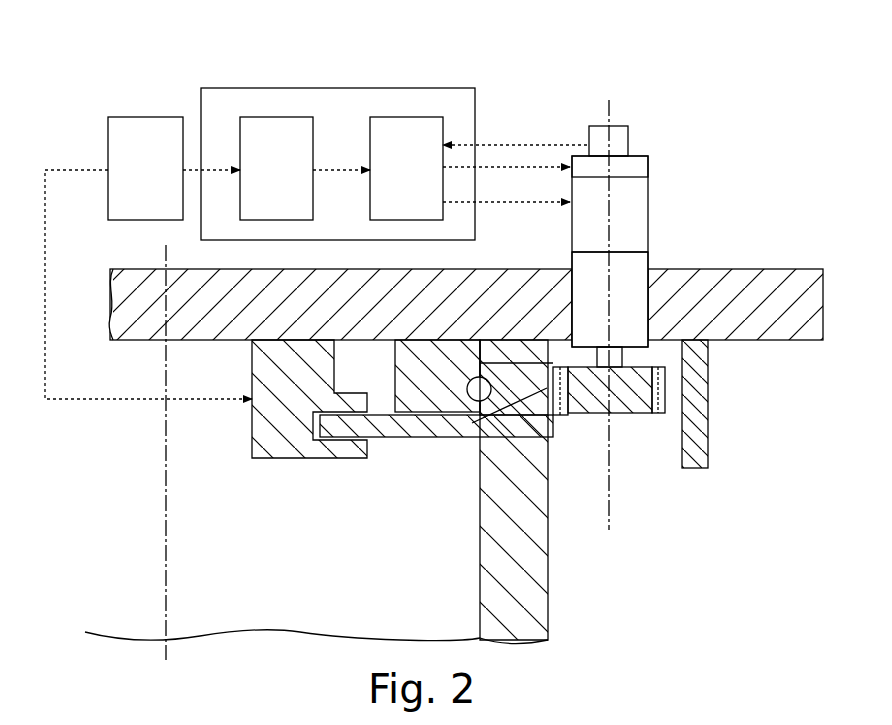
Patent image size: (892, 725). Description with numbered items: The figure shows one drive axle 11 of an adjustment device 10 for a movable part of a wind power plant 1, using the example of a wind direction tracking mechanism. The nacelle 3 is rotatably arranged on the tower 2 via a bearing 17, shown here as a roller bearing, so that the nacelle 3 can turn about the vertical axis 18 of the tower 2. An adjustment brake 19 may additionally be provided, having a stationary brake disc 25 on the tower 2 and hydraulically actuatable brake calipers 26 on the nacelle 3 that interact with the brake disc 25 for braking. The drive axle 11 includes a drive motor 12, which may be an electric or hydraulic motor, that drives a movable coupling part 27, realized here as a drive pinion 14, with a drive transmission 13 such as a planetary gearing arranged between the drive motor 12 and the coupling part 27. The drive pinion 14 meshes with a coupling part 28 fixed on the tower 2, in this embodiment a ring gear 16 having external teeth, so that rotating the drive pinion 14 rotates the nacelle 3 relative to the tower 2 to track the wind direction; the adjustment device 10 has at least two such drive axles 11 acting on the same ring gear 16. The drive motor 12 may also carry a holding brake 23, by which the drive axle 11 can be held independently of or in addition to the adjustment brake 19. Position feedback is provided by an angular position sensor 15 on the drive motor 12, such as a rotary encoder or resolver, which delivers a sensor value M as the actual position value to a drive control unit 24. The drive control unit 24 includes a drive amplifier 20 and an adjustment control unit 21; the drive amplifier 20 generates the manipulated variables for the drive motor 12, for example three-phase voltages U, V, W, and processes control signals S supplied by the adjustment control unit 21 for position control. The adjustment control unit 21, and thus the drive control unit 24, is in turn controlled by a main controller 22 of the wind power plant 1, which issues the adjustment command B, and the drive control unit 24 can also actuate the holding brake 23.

The wind power plant 1 is at (665, 610).
The tower 2 is at (517, 583).
The nacelle 3 is at (145, 305).
The adjustment device 10 is at (670, 441).
The drive axle 11 is at (660, 255).
The drive motor 12 is at (625, 213).
The drive transmission 13 is at (625, 308).
The drive pinion 14 is at (655, 392).
The angular position sensor 15 is at (620, 140).
The ring gear 16 is at (567, 437).
The bearing 17 is at (465, 412).
The vertical axis 18 is at (165, 450).
The adjustment brake 19 is at (377, 447).
The drive amplifier 20 is at (478, 168).
The adjustment control unit 21 is at (276, 168).
The main controller 22 is at (148, 258).
The holding brake 23 is at (626, 167).
The drive control unit 24 is at (345, 82).
The brake disc 25 is at (479, 402).
The brake calipers 26 is at (266, 465).
The coupling part 27 is at (667, 430).
The coupling part 28 is at (587, 440).